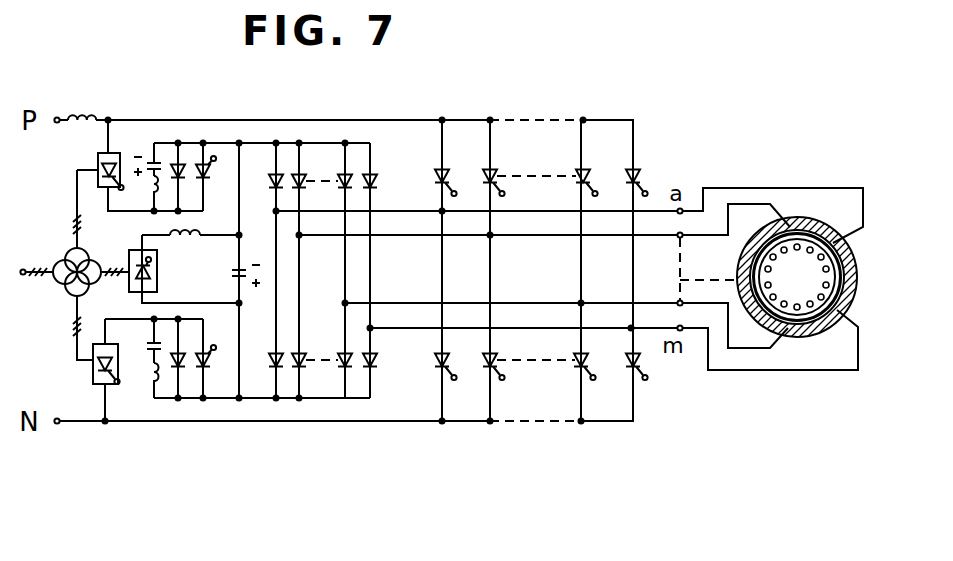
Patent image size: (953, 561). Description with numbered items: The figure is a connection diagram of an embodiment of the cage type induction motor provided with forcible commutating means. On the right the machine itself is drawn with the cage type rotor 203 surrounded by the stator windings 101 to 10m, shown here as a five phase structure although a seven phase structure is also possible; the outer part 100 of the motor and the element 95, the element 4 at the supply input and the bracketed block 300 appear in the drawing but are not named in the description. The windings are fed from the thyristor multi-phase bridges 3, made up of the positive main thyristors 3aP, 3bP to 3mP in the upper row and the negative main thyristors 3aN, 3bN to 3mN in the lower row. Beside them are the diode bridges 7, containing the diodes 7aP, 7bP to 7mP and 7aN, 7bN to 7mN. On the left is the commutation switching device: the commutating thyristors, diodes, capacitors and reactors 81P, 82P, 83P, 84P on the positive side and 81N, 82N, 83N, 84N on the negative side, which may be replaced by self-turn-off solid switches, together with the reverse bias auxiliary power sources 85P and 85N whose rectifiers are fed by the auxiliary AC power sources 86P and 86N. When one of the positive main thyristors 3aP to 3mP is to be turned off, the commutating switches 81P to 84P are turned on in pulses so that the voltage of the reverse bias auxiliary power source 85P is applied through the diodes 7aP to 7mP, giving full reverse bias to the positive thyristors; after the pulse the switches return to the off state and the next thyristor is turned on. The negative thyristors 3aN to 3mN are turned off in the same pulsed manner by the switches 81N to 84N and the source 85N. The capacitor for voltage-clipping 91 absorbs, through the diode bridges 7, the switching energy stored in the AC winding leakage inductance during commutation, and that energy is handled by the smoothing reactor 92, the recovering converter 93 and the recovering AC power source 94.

The reactor 4 is at (80, 113).
The reverse bias auxiliary power source 85P is at (113, 152).
The commutating switch 84P is at (162, 160).
The commutating switch 83P is at (182, 165).
The commutating switch 82P is at (216, 158).
The commutating switch 81P is at (158, 190).
The reverse bias auxiliary power source 85N is at (92, 376).
The commutating switch 84N is at (141, 392).
The commutating switch 83N is at (143, 345).
The commutating switch 82N is at (184, 366).
The commutating switch 81N is at (212, 362).
The diode bridges 7 is at (299, 238).
The diode 7aP is at (280, 172).
The diode 7bP is at (303, 172).
The diode 7mP is at (374, 172).
The diode 7aN is at (278, 370).
The diode 7bN is at (306, 366).
The diode 7mN is at (372, 368).
The thyristor multi-phase bridges 3 is at (492, 238).
The positive main thyristor 3aP is at (448, 173).
The positive main thyristor 3bP is at (503, 172).
The positive main thyristor 3mP is at (622, 178).
The negative main thyristor 3aN is at (437, 363).
The negative main thyristor 3bN is at (483, 363).
The negative main thyristor 3mN is at (645, 362).
The capacitor for voltage-clipping 91 is at (230, 277).
The smoothing reactor 92 is at (183, 238).
The recovering converter 93 is at (126, 265).
The recovering AC power source 94 is at (90, 283).
The transformer 95 is at (60, 262).
The auxiliary AC power source 86P is at (63, 258).
The auxiliary AC power source 86N is at (63, 285).
The converter 300 is at (125, 486).
The stator 100 is at (797, 337).
The stator winding 101 is at (802, 220).
The cage type rotor 203 is at (798, 310).
The stator winding 10m is at (857, 265).